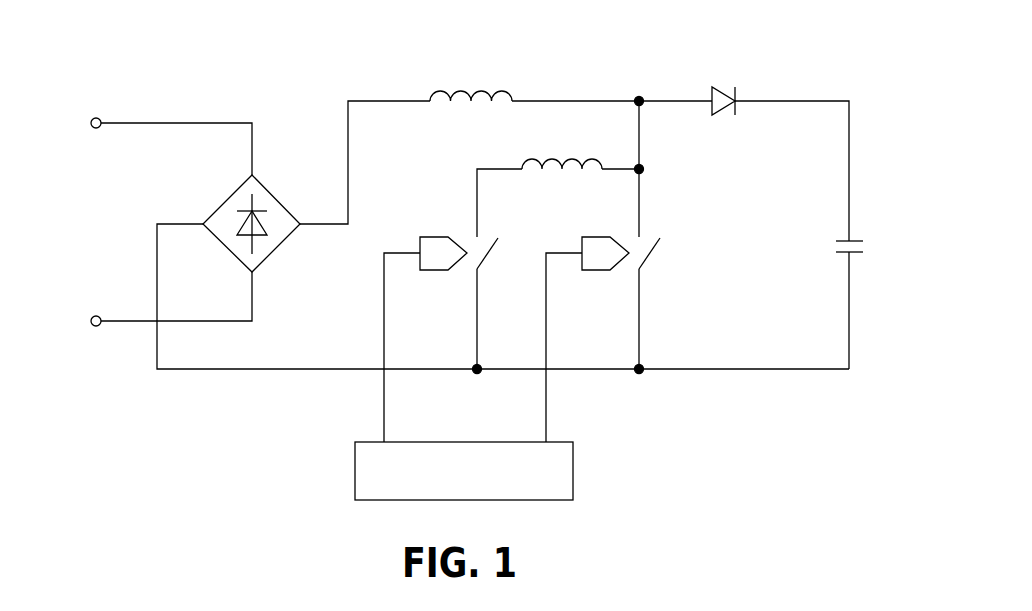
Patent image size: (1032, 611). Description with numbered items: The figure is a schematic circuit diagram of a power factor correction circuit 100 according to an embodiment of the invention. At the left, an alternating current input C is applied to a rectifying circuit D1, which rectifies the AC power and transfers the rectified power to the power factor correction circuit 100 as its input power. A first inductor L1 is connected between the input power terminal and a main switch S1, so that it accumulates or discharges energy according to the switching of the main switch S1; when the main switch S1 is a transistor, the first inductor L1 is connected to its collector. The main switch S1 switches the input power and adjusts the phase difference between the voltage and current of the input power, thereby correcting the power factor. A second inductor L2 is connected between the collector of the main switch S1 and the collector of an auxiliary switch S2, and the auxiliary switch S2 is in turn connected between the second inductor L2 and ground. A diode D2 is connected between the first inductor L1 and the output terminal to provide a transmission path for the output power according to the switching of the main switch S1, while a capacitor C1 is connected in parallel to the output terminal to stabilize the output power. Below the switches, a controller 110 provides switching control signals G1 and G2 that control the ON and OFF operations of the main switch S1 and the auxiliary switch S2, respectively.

The power factor correction circuit 100 is at (253, 43).
The controller 110 is at (573, 468).
The AC input terminals C is at (76, 222).
The rectifying circuit D1 is at (244, 222).
The first inductor L1 is at (471, 79).
The second inductor L2 is at (562, 149).
The diode D2 is at (723, 85).
The capacitor C1 is at (870, 245).
The main switch S1 is at (661, 264).
The auxiliary switch S2 is at (498, 264).
The switching control signal G1 is at (605, 253).
The switching control signal G2 is at (443, 253).